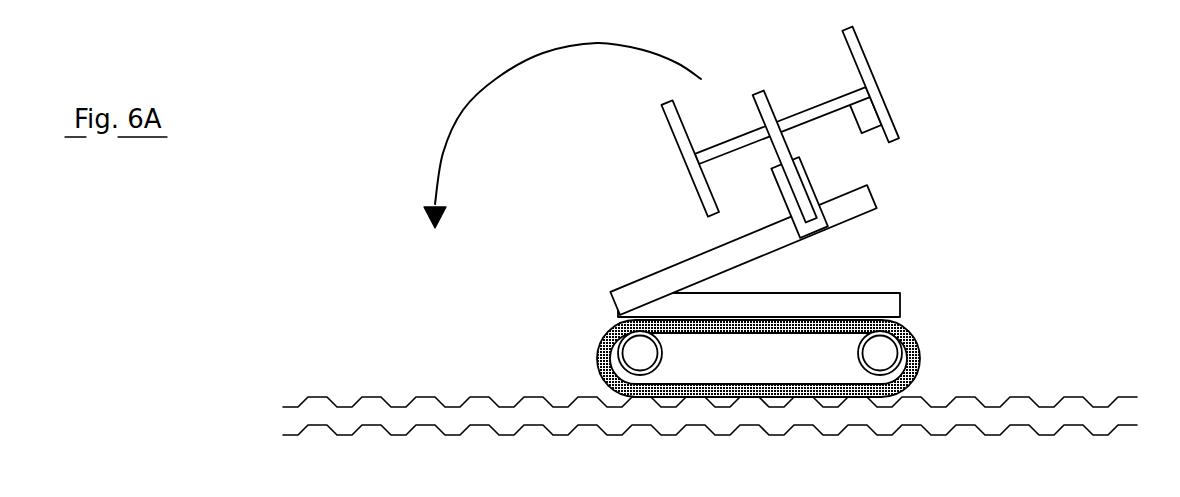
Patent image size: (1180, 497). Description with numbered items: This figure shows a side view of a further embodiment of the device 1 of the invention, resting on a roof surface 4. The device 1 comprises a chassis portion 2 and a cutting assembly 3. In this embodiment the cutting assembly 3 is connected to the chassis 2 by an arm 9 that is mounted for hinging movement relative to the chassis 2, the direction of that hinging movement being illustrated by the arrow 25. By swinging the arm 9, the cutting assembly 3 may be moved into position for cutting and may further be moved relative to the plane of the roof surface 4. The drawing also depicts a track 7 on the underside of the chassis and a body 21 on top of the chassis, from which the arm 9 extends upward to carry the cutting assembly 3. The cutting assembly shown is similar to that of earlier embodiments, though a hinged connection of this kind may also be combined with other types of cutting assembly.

The device 1 is at (980, 178).
The chassis portion 2 is at (938, 286).
The cutting assembly 3 is at (921, 74).
The roof surface 4 is at (995, 386).
The caterpillar track 7 is at (920, 338).
The arm 9 is at (643, 282).
The chassis body frame 21 is at (808, 302).
The arrow 25 is at (498, 70).